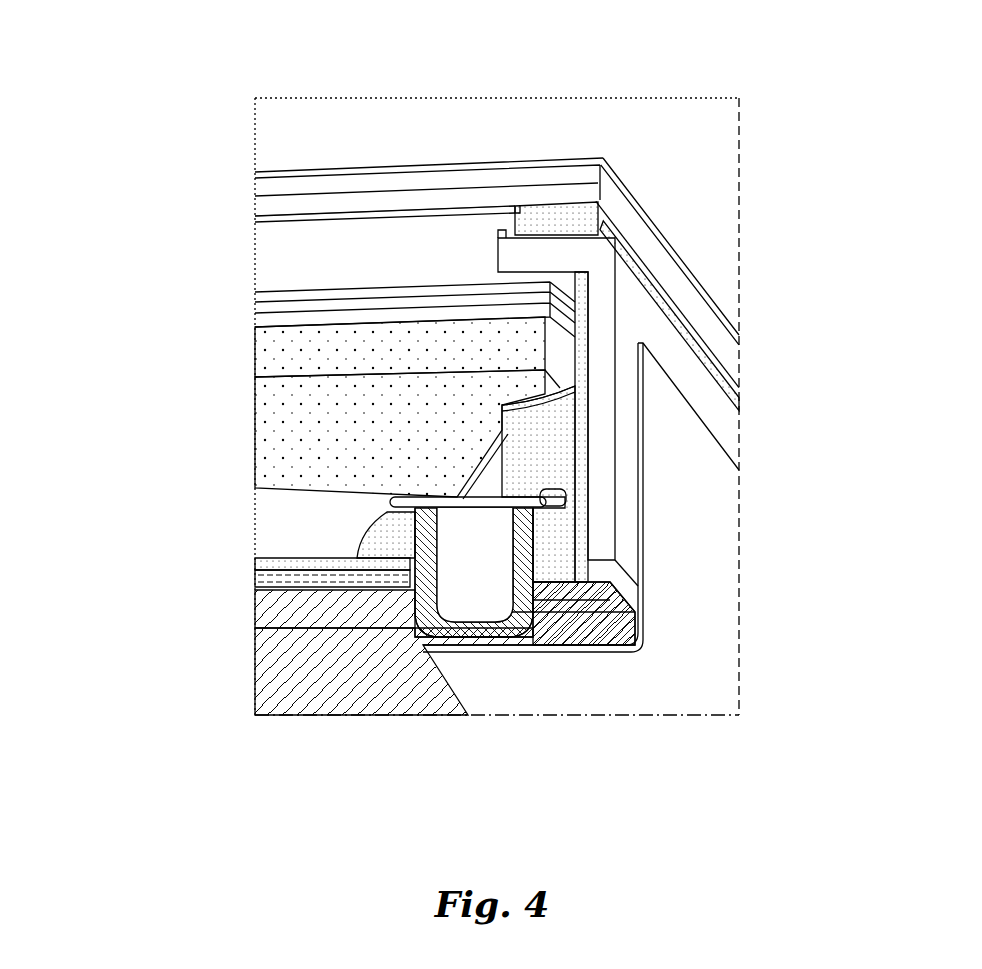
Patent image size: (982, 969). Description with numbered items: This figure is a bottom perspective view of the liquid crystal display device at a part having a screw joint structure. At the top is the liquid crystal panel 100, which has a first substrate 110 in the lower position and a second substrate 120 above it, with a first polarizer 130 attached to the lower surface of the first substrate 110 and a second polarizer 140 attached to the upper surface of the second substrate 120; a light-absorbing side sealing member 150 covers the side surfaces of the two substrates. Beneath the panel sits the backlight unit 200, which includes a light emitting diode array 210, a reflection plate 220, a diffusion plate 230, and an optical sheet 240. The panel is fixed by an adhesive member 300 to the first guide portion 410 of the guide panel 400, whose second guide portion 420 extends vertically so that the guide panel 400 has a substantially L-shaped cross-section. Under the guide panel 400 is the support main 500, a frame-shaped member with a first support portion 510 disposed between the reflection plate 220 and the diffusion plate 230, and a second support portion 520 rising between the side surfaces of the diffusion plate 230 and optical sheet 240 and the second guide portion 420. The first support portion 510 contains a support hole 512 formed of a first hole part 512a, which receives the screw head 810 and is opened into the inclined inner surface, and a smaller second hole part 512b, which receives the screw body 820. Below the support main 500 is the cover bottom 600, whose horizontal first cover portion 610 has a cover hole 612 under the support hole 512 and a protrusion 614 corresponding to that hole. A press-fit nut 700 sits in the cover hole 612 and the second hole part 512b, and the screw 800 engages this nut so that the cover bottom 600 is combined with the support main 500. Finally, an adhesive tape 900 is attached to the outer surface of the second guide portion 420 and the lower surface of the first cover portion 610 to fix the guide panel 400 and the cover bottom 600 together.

The liquid crystal panel 100 is at (429, 120).
The first substrate 110 is at (293, 222).
The second substrate 120 is at (380, 188).
The first polarizer 130 is at (435, 203).
The second polarizer 140 is at (493, 168).
The side sealing member 150 is at (598, 183).
The backlight unit 200 is at (322, 440).
The light emitting diode array 210 is at (277, 584).
The reflection plate 220 is at (255, 565).
The diffusion plate 230 is at (275, 355).
The optical sheet 240 is at (250, 295).
The adhesive member 300 is at (562, 253).
The guide panel 400 is at (655, 426).
The first guide portion 410 is at (680, 313).
The second guide portion 420 is at (687, 333).
The support main 500 is at (622, 427).
The first support portion 510 is at (548, 437).
The support hole 512 is at (706, 537).
The first hole part 512a is at (556, 472).
The second hole part 512b is at (540, 546).
The second support portion 520 is at (590, 348).
The cover bottom 600 is at (487, 682).
The first cover portion 610 is at (260, 651).
The cover hole 612 is at (585, 615).
The protrusion 614 is at (558, 608).
The press-fit nut 700 is at (530, 645).
The screw 800 is at (427, 678).
The screw head 810 is at (403, 505).
The screw body 820 is at (490, 590).
The adhesive tape 900 is at (715, 672).